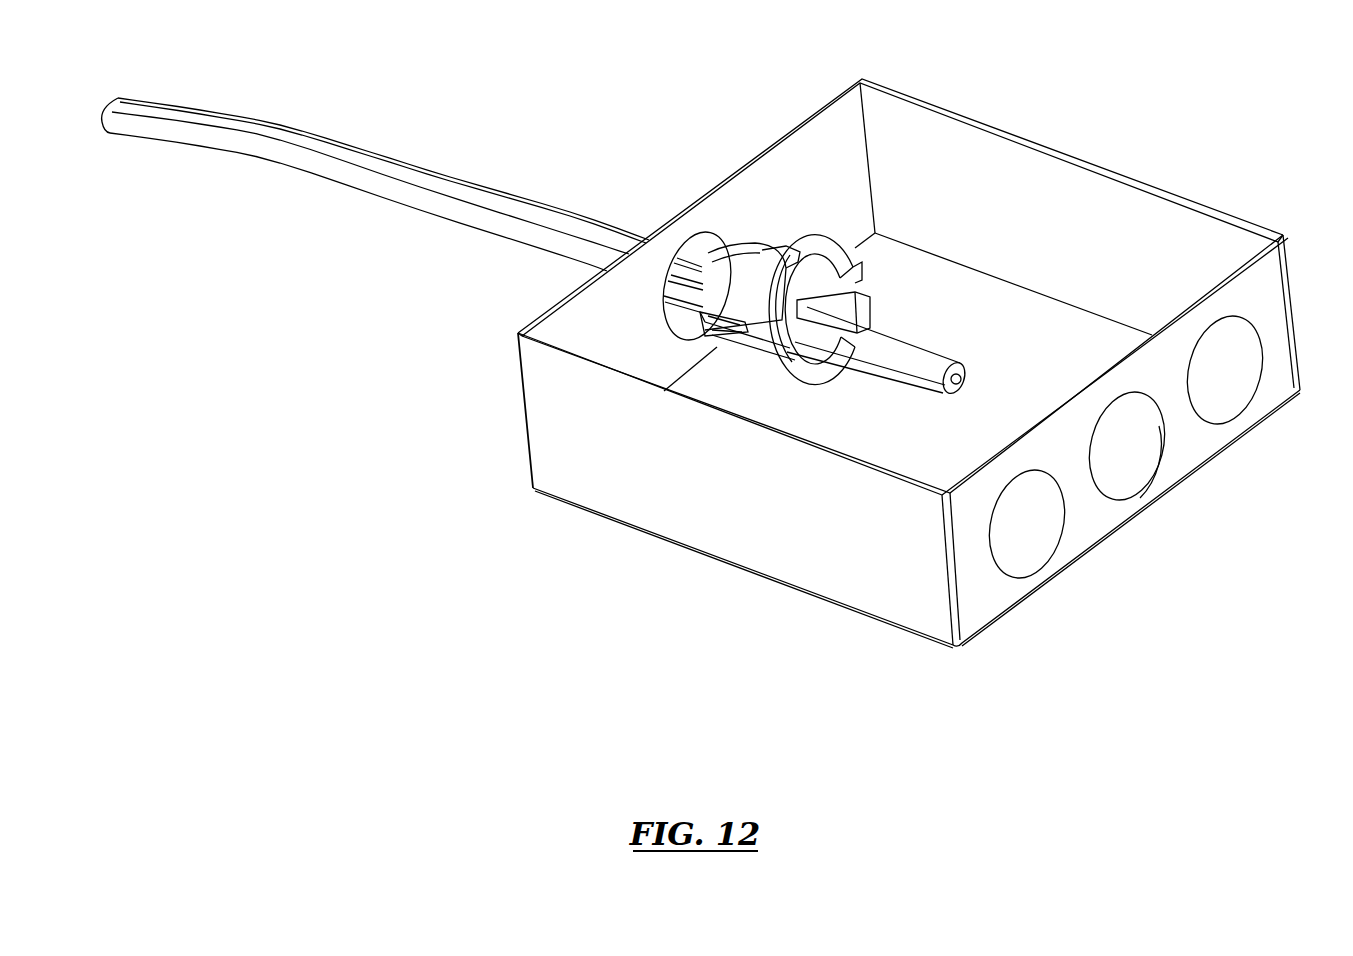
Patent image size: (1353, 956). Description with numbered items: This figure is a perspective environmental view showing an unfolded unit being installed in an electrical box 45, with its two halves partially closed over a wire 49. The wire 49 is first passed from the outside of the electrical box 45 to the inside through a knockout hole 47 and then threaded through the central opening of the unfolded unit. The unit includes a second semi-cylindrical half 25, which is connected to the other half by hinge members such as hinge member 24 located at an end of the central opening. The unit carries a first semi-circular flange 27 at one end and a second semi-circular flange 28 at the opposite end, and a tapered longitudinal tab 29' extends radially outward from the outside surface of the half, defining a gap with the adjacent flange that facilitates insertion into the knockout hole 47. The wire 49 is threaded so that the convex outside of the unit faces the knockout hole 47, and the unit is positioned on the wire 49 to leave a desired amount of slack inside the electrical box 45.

The hinge member 24 is at (700, 318).
The second semi-cylindrical half 25 is at (738, 283).
The first semi-circular flange 27 is at (870, 312).
The second semi-circular flange 28 is at (856, 262).
The tapered longitudinal tab 29' is at (806, 209).
The electrical box 45 is at (1058, 237).
The knockout hole 47 is at (704, 250).
The wire 49 is at (299, 152).